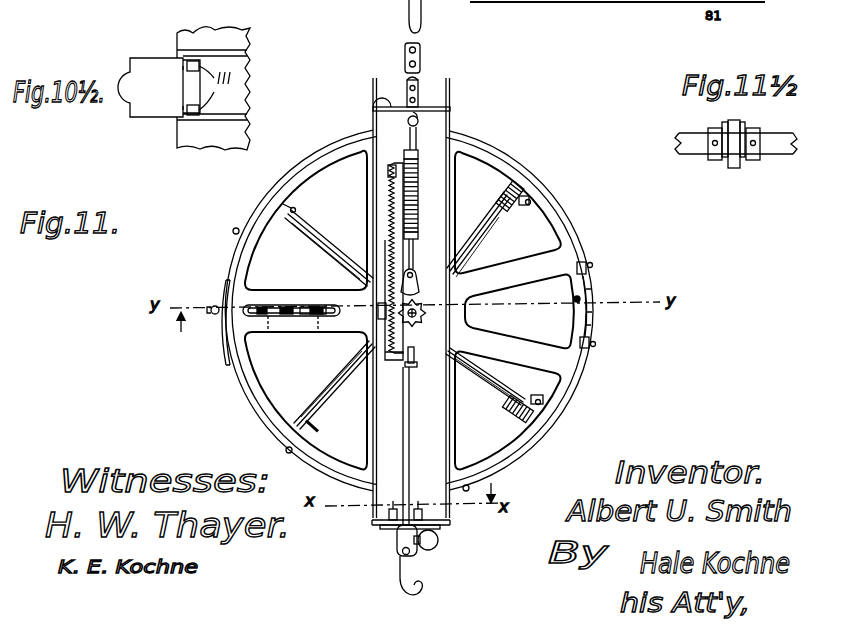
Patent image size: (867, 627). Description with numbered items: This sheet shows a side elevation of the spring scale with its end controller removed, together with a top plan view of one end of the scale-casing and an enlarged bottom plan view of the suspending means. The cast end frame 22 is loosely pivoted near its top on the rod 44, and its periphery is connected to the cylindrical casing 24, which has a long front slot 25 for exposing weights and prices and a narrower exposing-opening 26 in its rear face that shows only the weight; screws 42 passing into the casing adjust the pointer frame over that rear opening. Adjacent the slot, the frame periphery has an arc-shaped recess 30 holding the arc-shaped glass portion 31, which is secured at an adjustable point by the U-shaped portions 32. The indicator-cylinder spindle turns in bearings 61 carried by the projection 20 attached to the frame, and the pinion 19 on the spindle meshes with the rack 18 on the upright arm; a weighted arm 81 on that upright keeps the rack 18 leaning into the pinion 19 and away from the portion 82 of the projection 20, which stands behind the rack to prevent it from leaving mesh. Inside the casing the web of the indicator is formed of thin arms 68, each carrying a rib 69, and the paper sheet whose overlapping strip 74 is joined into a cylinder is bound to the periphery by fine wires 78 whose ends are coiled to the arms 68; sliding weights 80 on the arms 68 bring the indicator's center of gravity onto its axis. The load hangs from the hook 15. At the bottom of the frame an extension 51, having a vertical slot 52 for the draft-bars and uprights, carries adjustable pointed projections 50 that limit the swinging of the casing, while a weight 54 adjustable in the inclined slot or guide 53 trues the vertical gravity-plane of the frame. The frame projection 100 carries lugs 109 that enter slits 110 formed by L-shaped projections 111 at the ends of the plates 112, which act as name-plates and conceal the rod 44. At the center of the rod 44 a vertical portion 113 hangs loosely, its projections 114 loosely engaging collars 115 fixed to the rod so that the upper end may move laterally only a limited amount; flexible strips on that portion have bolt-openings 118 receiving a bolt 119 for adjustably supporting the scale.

In FIG. 11, the weight-receiving hook 15 is at (421, 28).
In FIG. 11, the rack 18 is at (400, 236).
In FIG. 11, the pinion 19 is at (419, 323).
In FIG. 11, the projection 20 is at (418, 281).
In FIG. 11, the end frame 22 is at (558, 222).
In FIG. 11, the cylindrical casing 24 is at (586, 365).
In FIG. 11, the slot 25 is at (592, 319).
In FIG. 11, the exposing-opening 26 is at (231, 352).
In FIG. 11, the arc-shaped recess 30 is at (591, 267).
In FIG. 11, the glass portion 31 is at (589, 291).
In FIG. 11, the U-shaped portion 32 is at (589, 276).
In FIG. 11, the screw 42 is at (212, 313).
The rod 44 is at (678, 145).
In FIG. 11, the rod 44 is at (420, 122).
In FIG. 11, the projection 50 is at (393, 508).
In FIG. 11, the extension 51 is at (444, 528).
In FIG. 11, the vertical slot 52 is at (398, 528).
In FIG. 11, the slot or guide 53 is at (329, 318).
In FIG. 11, the weight 54 is at (297, 318).
In FIG. 11, the bearing 61 is at (426, 312).
In FIG. 11, the arm 68 is at (326, 252).
In FIG. 11, the rib 69 is at (338, 259).
In FIG. 11, the strip 74 is at (550, 3).
In FIG. 11, the wire 78 is at (498, 191).
In FIG. 11, the weight 80 is at (290, 212).
The weighted arm 81 is at (96, 10).
In FIG. 11, the weighted arm 81 is at (431, 549).
In FIG. 11, the portion 82 is at (378, 309).
The projection 100 is at (150, 87).
In FIG. 11, the projection 100 is at (382, 106).
The lug 109 is at (190, 56).
The slit 110 is at (193, 62).
The L-shaped projection 111 is at (214, 88).
The plate 112 is at (213, 53).
In FIG. 11, the plate 112 is at (372, 85).
The vertical portion 113 is at (734, 168).
The projection 114 is at (734, 128).
The collar 115 is at (715, 160).
In FIG. 11, the bolt-opening 118 is at (419, 82).
In FIG. 11, the bolt 119 is at (405, 47).